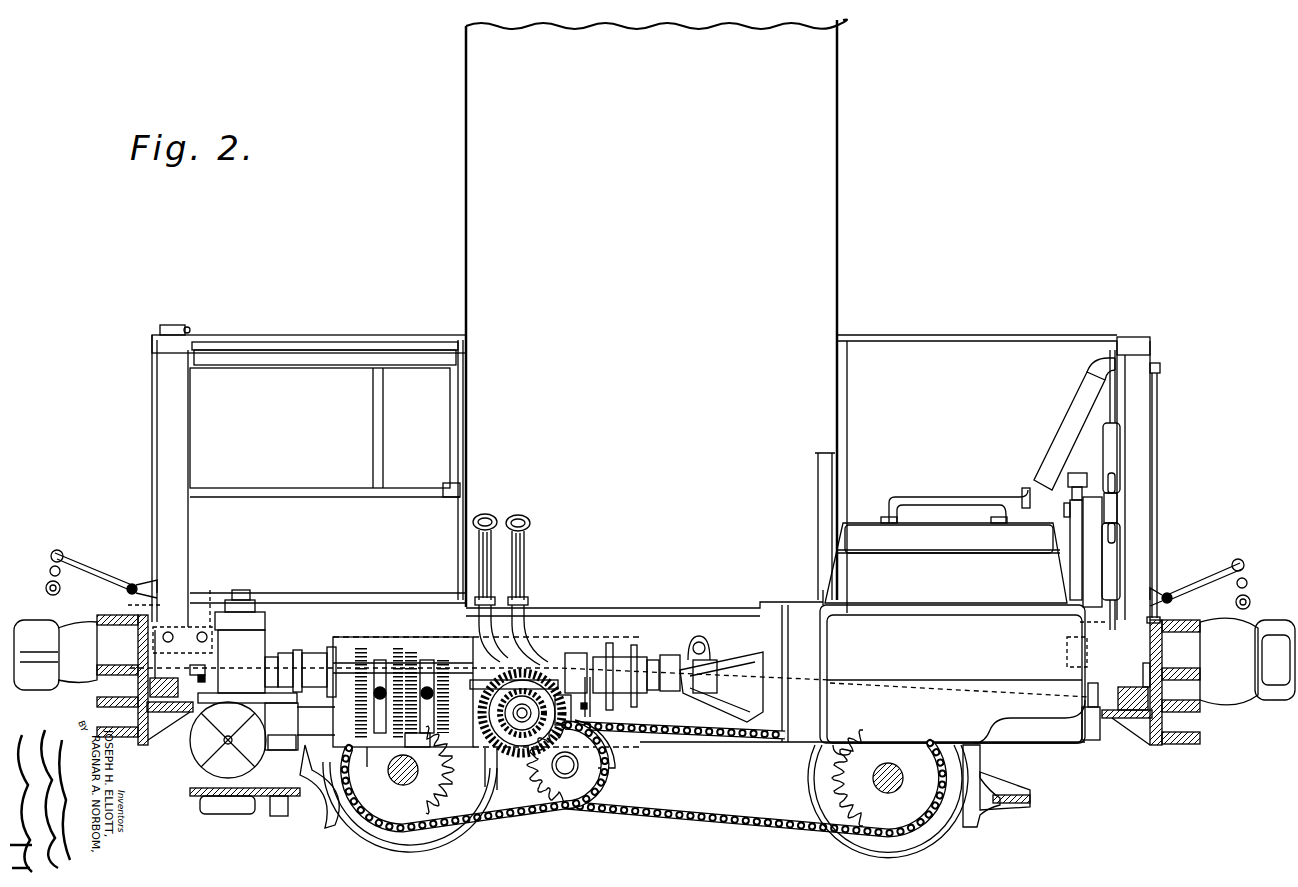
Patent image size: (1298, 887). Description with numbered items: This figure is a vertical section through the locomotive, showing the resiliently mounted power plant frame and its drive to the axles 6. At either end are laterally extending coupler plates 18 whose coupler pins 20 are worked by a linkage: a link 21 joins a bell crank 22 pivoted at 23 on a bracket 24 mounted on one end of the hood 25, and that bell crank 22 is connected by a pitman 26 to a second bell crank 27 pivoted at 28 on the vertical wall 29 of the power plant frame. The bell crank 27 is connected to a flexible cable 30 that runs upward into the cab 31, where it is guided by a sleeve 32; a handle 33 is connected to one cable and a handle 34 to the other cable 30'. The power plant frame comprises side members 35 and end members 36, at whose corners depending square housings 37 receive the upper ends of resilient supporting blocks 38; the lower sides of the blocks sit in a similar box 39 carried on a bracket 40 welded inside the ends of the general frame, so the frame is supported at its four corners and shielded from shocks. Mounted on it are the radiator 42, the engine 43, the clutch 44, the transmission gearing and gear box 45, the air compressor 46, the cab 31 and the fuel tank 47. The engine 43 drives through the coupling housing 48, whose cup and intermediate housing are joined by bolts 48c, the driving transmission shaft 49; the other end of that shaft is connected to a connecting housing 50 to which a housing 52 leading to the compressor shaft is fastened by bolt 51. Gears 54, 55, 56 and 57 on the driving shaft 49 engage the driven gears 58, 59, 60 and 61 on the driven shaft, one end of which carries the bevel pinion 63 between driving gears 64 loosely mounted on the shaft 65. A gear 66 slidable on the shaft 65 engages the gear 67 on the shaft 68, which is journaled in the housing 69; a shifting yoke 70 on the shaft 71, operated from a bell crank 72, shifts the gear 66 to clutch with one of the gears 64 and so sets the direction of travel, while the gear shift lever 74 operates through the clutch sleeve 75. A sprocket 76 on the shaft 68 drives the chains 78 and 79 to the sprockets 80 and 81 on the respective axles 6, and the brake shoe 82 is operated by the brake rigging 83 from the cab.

The axles 6 is at (404, 784).
The coupler plates 18 is at (1200, 715).
The pins 20 is at (1262, 600).
The link 21 is at (52, 555).
The bell crank 22 is at (88, 562).
The pivot 23 is at (132, 584).
The bracket 24 is at (150, 592).
The hood 25 is at (153, 482).
The pitman 26 is at (605, 615).
The bell crank 27 is at (200, 627).
The pivot 28 is at (1068, 660).
The vertical wall 29 is at (1150, 652).
The flexible cable 30 is at (266, 690).
The shaft 30' is at (955, 680).
The cab 31 is at (466, 247).
The sleeve 32 is at (479, 563).
The handle 33 is at (490, 575).
The handle 34 is at (522, 512).
The side members 35 is at (212, 627).
The end members 36 is at (1148, 672).
The square housings 37 is at (1125, 695).
The resilient supporting blocks 38 is at (1147, 700).
The box 39 is at (1140, 718).
The bracket 40 is at (1150, 712).
The radiator 42 is at (1137, 398).
The engine 43 is at (947, 590).
The clutch 44 is at (757, 640).
The transmission gearing and gear box 45 is at (340, 640).
The air compressor 46 is at (262, 615).
The fuel tank 47 is at (200, 378).
The coupling housing 48 is at (612, 643).
The bolts 48c is at (636, 645).
The driving transmission shaft 49 is at (578, 652).
The connecting housing 50 is at (320, 660).
The bolt 51 is at (298, 650).
The housing 52 is at (286, 653).
The gear 54 is at (444, 660).
The gear 55 is at (411, 652).
The gear 56 is at (398, 648).
The gear 57 is at (360, 648).
The driven gear 58 is at (435, 748).
The driven gear 59 is at (388, 761).
The driven gear 60 is at (383, 737).
The driven gear 61 is at (367, 747).
The bevel pinion 63 is at (410, 807).
The driving gears 64 is at (494, 762).
The shaft 65 is at (518, 682).
The gear 66 is at (527, 700).
The gear 67 is at (546, 765).
The shaft 68 is at (597, 758).
The housing 69 is at (560, 812).
The shifting yoke 70 is at (490, 693).
The shaft 71 is at (562, 695).
The bell crank 72 is at (590, 705).
The gear shift lever 74 is at (380, 696).
The clutch sleeve 75 is at (381, 687).
The sprocket 76 is at (577, 778).
The chain 78 is at (365, 822).
The chain 79 is at (428, 687).
The sprocket 80 is at (452, 760).
The sprocket 81 is at (835, 770).
The brake shoe 82 is at (333, 822).
The brake rigging 83 is at (285, 804).